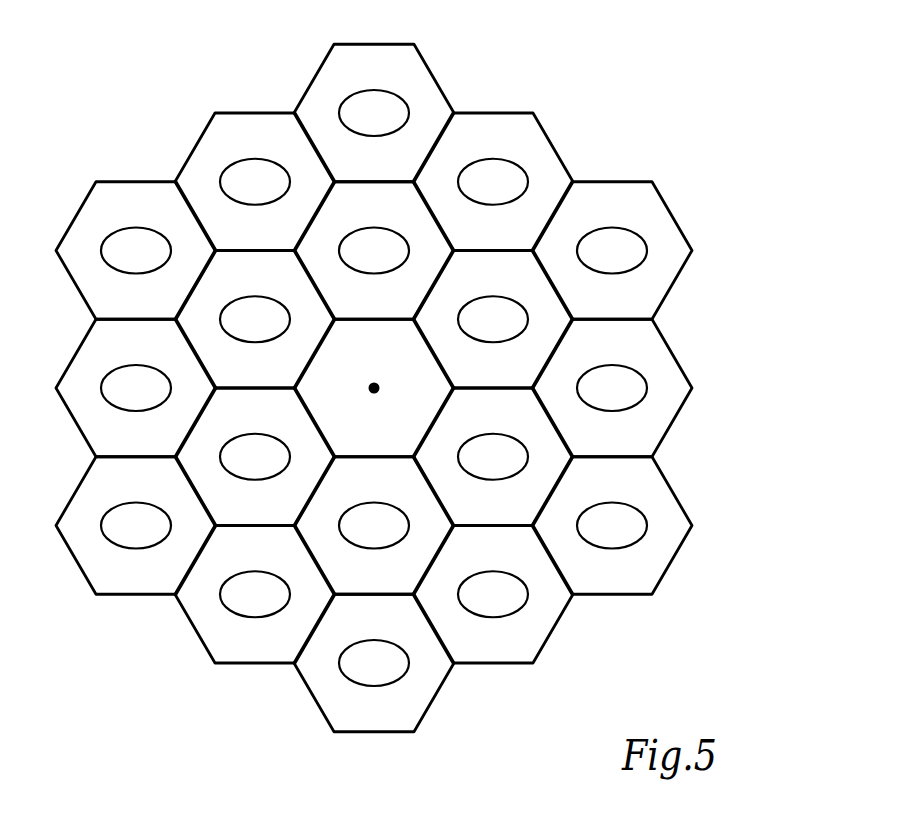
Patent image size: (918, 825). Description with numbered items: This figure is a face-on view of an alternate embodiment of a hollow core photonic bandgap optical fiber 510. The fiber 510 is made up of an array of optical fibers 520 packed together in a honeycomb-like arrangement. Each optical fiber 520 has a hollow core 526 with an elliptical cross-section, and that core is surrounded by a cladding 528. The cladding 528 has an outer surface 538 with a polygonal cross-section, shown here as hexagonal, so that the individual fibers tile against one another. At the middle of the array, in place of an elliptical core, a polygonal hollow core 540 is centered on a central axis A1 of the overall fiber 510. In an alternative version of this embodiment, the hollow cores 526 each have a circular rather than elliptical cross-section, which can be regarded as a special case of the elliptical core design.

The hollow core photonic bandgap optical fiber 510 is at (413, 371).
The optical fibers 520 is at (621, 121).
The outer surface 538 is at (663, 198).
The cladding 528 is at (671, 245).
The hollow core 526 is at (625, 262).
The polygonal hollow core 540 is at (378, 369).
The central axis A1 is at (377, 386).